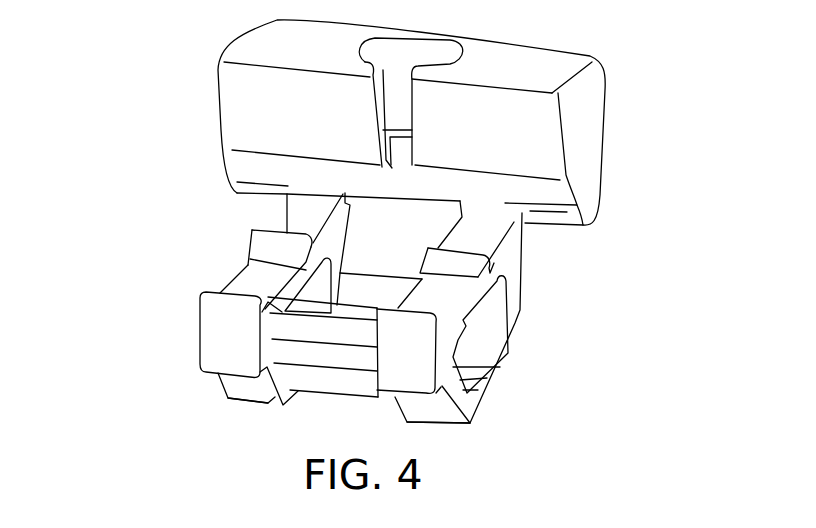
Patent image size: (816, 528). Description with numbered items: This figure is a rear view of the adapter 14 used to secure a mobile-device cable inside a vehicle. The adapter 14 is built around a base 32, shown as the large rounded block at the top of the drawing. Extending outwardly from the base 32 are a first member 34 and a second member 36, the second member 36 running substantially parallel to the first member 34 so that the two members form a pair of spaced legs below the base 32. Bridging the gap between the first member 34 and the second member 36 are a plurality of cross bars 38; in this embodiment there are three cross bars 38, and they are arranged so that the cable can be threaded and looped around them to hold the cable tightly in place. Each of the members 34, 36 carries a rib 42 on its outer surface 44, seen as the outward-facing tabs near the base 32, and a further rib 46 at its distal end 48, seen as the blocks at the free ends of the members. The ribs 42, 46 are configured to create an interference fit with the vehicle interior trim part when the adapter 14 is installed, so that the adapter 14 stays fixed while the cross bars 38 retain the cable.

The adapter 14 is at (152, 229).
The base 32 is at (593, 136).
The first member 34 is at (228, 257).
The second member 36 is at (495, 236).
The cross bars 38 is at (347, 287).
The rib 42 is at (250, 240).
The outer surface 44 is at (286, 229).
The rib 46 is at (218, 332).
The distal end 48 is at (203, 403).